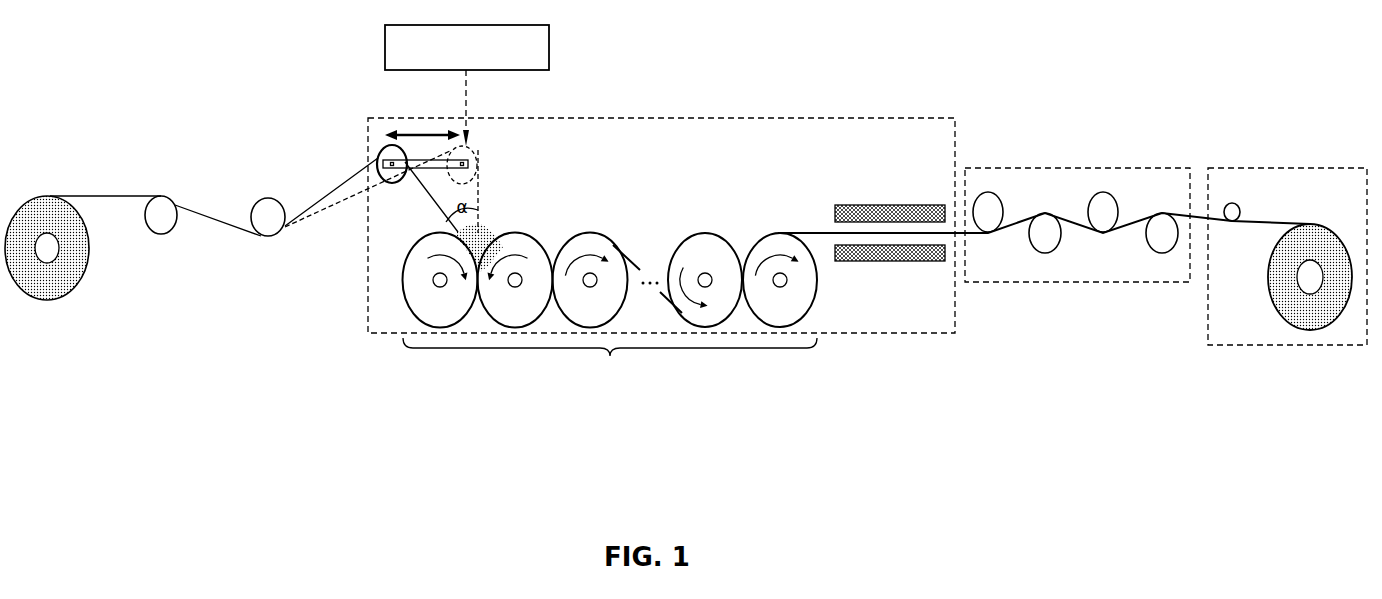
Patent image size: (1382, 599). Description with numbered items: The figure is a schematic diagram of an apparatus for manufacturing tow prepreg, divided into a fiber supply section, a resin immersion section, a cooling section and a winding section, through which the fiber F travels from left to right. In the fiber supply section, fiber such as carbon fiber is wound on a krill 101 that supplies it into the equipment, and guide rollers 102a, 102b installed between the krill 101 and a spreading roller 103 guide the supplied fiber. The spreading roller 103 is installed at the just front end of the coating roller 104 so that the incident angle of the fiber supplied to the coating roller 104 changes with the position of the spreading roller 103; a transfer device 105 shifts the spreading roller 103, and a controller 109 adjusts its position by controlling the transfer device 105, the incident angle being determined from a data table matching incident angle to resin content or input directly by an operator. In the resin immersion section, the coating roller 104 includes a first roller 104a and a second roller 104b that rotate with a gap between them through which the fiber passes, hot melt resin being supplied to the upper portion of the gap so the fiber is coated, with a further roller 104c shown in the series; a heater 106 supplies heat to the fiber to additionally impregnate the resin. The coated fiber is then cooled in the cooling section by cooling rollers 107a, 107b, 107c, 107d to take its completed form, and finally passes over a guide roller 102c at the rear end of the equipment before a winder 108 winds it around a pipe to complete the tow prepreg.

The film web F is at (103, 195).
The krill 101 is at (43, 300).
The guide roller 102a is at (161, 227).
The guide roller 102b is at (267, 200).
The guide roller 102c is at (1230, 202).
The spreading roller 103 is at (377, 155).
The coating roller 104 is at (632, 253).
The first roller 104a is at (405, 282).
The second roller 104b is at (527, 232).
The third roller 104c is at (605, 242).
The transfer device 105 is at (467, 163).
The heater 106 is at (890, 261).
The roller 107a is at (985, 195).
The roller 107b is at (1045, 248).
The roller 107c is at (1102, 195).
The roller 107d is at (1162, 248).
The winder 108 is at (1308, 327).
The controller 109 is at (549, 43).